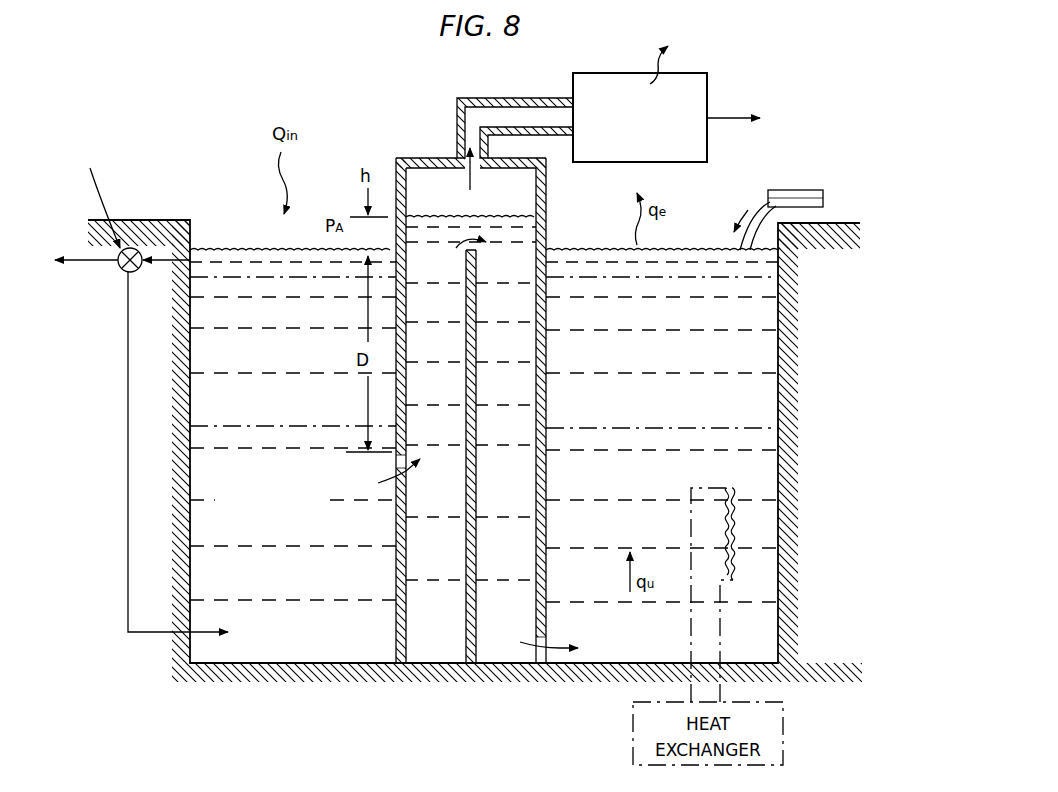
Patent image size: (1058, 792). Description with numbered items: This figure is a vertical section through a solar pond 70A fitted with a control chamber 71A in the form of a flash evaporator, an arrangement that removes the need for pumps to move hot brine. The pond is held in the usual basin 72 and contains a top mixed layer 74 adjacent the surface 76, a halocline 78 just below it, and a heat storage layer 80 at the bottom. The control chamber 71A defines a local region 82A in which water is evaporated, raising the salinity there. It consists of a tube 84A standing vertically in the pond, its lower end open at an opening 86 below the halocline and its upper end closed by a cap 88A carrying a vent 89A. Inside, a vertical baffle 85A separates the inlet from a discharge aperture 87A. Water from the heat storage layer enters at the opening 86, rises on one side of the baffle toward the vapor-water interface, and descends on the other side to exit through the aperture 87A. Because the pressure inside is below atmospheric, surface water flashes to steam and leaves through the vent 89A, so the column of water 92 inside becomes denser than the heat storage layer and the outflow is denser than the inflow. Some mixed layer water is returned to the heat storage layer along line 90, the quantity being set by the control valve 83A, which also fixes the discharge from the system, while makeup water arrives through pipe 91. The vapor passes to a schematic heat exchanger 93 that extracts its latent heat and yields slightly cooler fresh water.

The solar pond 70A is at (226, 194).
The control chamber 71A is at (470, 389).
The basin 72 is at (176, 410).
The mixed layer 74 is at (484, 266).
The surface 76 is at (590, 248).
The halocline 78 is at (484, 362).
The heat storage layer 80 is at (484, 525).
The local region 82A is at (428, 132).
The control valve 83A is at (136, 248).
The tube 84A is at (546, 342).
The baffle 85A is at (478, 358).
The opening 86 is at (398, 462).
The discharge aperture 87A is at (554, 640).
The cap 88A is at (408, 156).
The vent 89A is at (546, 96).
The line 90 is at (128, 546).
The pipe 91 is at (804, 207).
The column of water 92 is at (510, 404).
The heat exchanger 93 is at (698, 88).